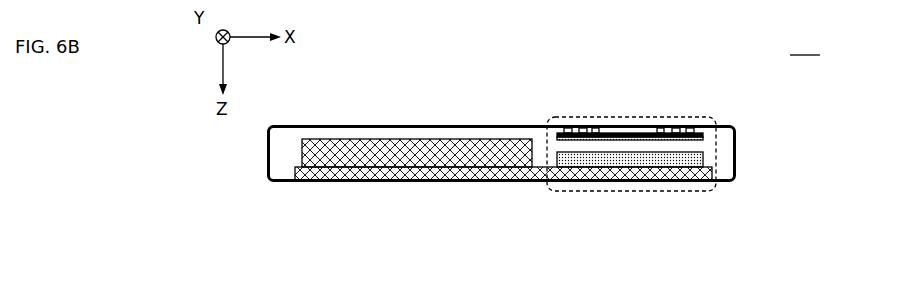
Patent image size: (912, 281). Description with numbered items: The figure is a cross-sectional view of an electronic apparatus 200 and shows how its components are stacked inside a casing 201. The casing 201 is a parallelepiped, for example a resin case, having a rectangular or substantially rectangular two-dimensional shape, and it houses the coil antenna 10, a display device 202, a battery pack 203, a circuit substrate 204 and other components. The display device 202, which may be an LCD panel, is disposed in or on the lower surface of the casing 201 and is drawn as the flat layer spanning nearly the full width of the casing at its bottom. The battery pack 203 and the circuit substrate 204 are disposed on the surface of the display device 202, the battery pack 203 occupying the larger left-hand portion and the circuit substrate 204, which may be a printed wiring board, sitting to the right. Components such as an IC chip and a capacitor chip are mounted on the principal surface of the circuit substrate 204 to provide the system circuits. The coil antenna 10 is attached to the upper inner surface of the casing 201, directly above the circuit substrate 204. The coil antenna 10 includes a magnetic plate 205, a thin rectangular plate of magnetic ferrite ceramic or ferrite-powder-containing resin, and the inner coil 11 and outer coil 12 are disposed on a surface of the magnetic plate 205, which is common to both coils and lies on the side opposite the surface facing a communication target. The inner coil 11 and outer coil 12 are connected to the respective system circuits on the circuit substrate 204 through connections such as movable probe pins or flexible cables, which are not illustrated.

The electronic apparatus 200 is at (807, 45).
The casing 201 is at (733, 127).
The display device 202 is at (402, 182).
The battery pack 203 is at (402, 139).
The circuit substrate 204 is at (627, 160).
The magnetic plate 205 is at (697, 139).
The coil antenna 10 is at (628, 116).
The inner coil 11 is at (595, 118).
The outer coil 12 is at (572, 118).